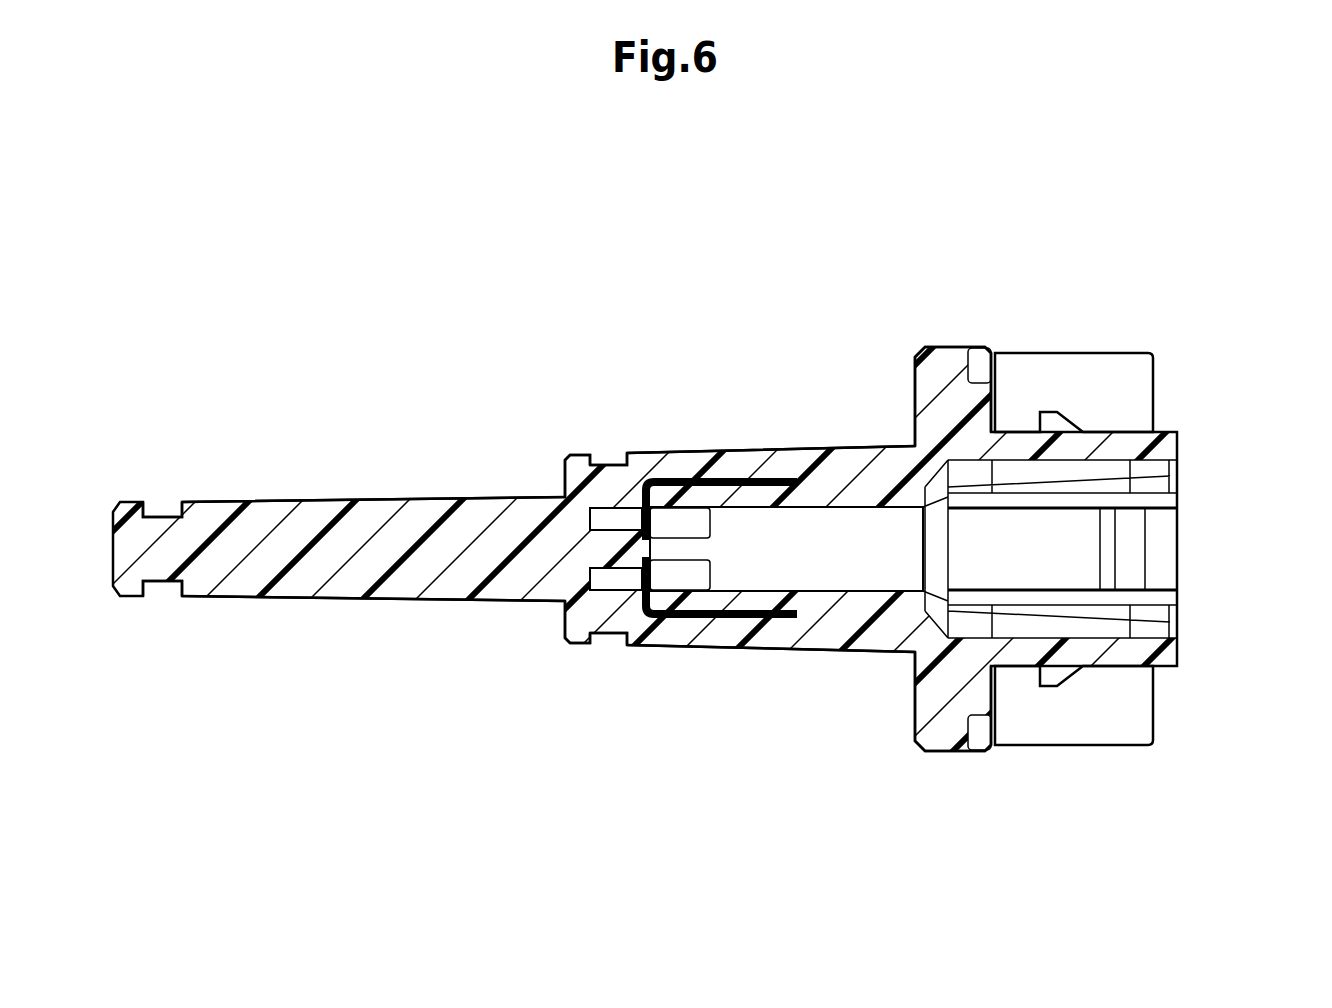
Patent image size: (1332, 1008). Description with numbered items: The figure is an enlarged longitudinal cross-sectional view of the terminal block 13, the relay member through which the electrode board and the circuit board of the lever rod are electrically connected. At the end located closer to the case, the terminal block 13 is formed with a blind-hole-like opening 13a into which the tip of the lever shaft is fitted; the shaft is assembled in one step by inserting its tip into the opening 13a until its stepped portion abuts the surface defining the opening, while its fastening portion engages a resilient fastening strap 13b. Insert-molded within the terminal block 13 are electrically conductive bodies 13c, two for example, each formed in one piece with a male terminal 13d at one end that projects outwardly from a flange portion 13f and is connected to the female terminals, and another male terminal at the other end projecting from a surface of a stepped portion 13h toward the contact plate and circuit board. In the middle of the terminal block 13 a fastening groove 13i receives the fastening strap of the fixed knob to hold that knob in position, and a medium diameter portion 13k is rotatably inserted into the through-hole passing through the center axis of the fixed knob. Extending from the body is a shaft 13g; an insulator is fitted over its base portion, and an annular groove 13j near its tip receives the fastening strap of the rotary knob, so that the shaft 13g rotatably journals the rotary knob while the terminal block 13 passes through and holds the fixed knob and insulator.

The terminal block 13 is at (338, 490).
The opening 13a is at (857, 520).
The resilient fastening strap 13b is at (1072, 440).
The electrically conductive body 13c is at (737, 474).
The male terminal 13d is at (1130, 548).
The flange portion 13f is at (945, 360).
The shaft 13g is at (295, 602).
The stepped portion 13h is at (562, 470).
The fastening groove 13i is at (608, 478).
The annular groove 13j is at (167, 590).
The medium diameter portion 13k is at (815, 652).